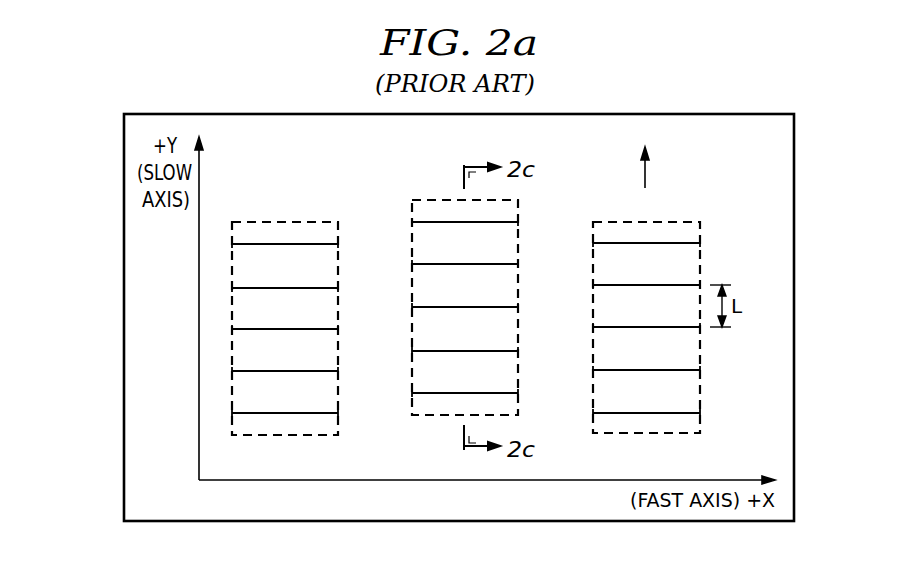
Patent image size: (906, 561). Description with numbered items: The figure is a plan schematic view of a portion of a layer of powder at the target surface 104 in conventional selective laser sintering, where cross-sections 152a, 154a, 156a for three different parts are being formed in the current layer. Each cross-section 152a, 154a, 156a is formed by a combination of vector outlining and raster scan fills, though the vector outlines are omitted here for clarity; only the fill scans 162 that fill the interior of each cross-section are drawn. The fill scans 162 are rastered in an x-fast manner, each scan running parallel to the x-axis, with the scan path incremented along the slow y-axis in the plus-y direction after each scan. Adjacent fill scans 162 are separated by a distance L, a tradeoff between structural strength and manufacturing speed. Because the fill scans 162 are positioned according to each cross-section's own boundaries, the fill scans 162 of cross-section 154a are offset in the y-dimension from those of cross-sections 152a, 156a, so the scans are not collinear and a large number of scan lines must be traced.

The target surface 104 is at (122, 318).
The cross-section 152a is at (254, 221).
The cross-section 154a is at (432, 199).
The cross-section 156a is at (678, 221).
The fill scans 162 is at (302, 243).